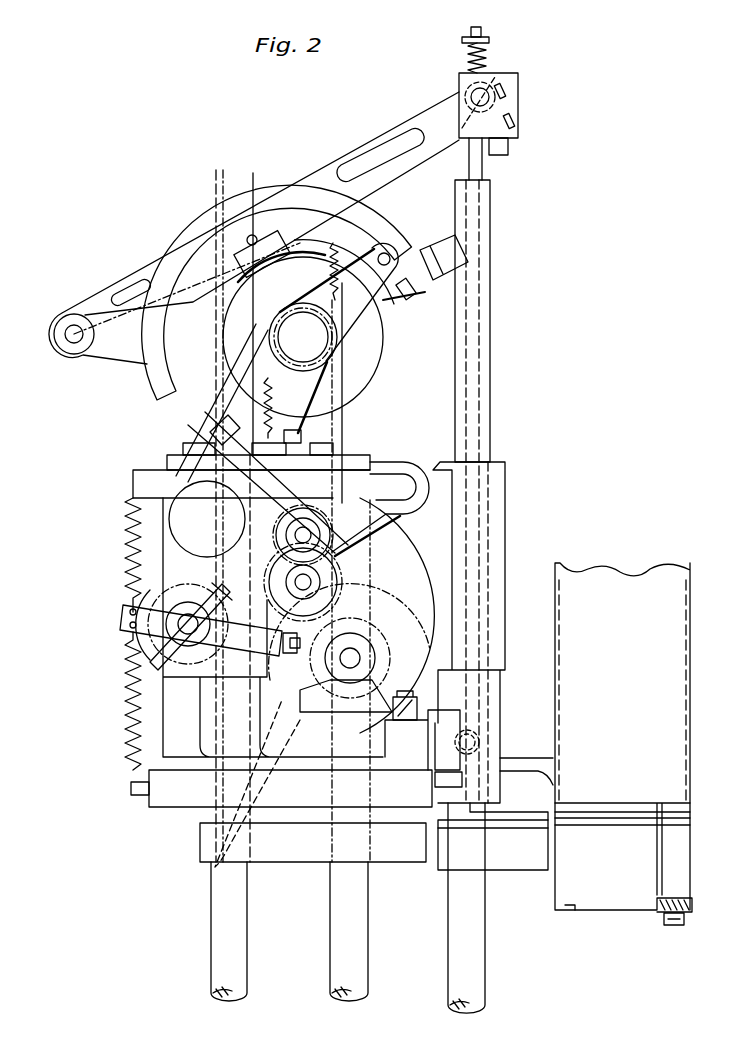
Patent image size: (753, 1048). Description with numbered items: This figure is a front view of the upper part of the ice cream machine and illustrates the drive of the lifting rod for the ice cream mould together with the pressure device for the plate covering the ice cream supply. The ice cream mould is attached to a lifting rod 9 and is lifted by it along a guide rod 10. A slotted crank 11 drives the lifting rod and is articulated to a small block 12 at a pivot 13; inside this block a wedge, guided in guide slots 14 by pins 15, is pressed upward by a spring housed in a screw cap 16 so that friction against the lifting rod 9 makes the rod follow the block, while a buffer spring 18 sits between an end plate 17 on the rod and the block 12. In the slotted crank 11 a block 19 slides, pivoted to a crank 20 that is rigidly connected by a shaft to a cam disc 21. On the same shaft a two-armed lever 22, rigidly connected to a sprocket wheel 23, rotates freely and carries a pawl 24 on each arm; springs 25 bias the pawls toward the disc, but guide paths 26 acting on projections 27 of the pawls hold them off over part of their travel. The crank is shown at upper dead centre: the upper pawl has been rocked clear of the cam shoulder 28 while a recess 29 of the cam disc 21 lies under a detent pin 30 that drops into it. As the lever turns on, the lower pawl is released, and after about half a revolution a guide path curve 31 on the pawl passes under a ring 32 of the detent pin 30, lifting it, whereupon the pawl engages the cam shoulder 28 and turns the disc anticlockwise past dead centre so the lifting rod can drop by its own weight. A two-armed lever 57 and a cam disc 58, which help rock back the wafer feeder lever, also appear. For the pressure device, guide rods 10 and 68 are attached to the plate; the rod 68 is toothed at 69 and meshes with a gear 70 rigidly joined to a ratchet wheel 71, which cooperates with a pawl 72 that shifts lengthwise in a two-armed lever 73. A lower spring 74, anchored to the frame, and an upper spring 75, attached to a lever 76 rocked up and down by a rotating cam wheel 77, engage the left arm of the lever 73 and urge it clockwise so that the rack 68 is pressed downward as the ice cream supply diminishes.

The lifting rod 9 is at (478, 165).
The guide rod 10 is at (472, 949).
The slotted crank 11 is at (349, 160).
The small block 12 is at (518, 92).
The articulation point 13 is at (490, 88).
The guide slots 14 is at (506, 98).
The pins 15 is at (504, 91).
The screw cap 16 is at (506, 152).
The end plate 17 is at (469, 38).
The buffer spring 18 is at (470, 62).
The block 19 is at (262, 240).
The crank 20 is at (310, 311).
The cam disc 21 is at (368, 366).
The two-armed lever 22 is at (360, 322).
The sprocket wheel 23 is at (333, 364).
The pawl 24 is at (388, 256).
The springs 25 is at (333, 243).
The guide paths 26 is at (445, 273).
The projections 27 is at (432, 250).
The cam shoulder 28 is at (300, 268).
The recess 29 is at (381, 342).
The detent pin 30 is at (384, 302).
The guide path curve 31 is at (216, 432).
The ring 32 is at (407, 296).
The two-armed lever 57 is at (403, 722).
The cam disc 58 is at (285, 710).
The guide rod 68 is at (222, 896).
The toothing 69 is at (218, 703).
The gear 70 is at (188, 658).
The ratchet wheel 71 is at (222, 648).
The pawl 72 is at (220, 597).
The two-armed lever 73 is at (124, 617).
The lower spring 74 is at (132, 700).
The upper spring 75 is at (132, 540).
The lever 76 is at (162, 480).
The cam wheel 77 is at (325, 535).